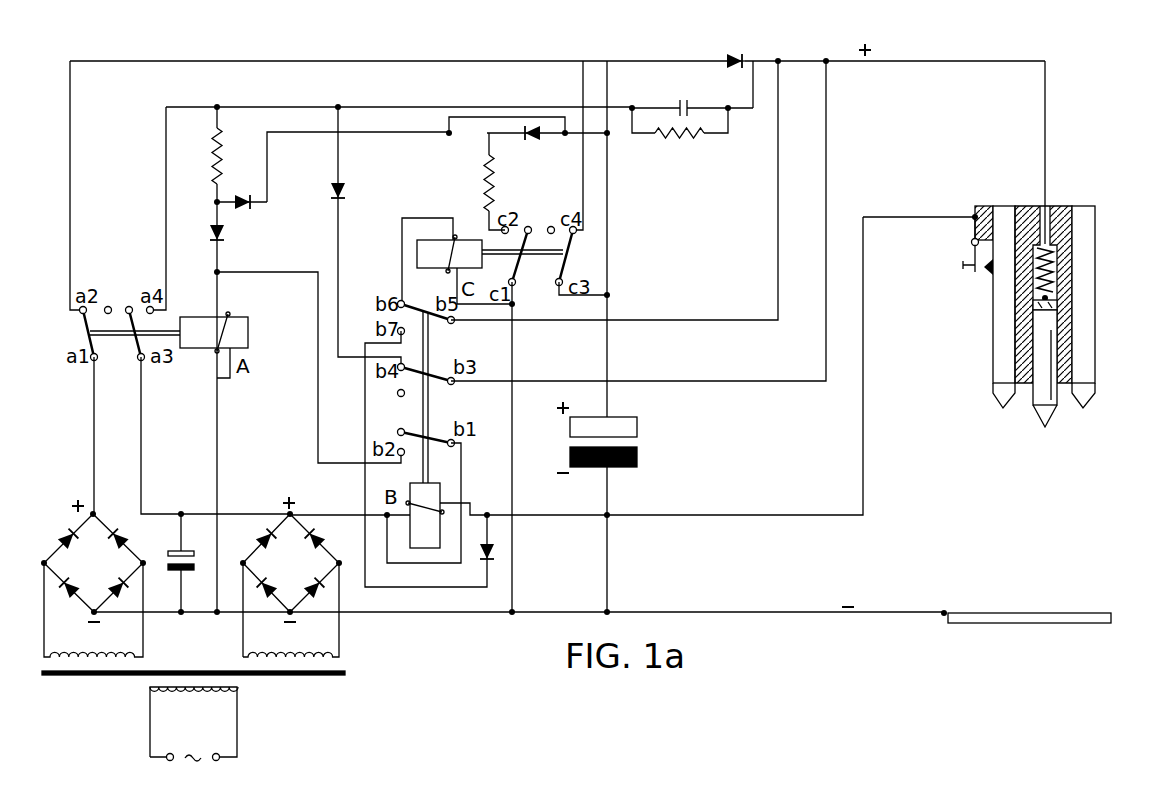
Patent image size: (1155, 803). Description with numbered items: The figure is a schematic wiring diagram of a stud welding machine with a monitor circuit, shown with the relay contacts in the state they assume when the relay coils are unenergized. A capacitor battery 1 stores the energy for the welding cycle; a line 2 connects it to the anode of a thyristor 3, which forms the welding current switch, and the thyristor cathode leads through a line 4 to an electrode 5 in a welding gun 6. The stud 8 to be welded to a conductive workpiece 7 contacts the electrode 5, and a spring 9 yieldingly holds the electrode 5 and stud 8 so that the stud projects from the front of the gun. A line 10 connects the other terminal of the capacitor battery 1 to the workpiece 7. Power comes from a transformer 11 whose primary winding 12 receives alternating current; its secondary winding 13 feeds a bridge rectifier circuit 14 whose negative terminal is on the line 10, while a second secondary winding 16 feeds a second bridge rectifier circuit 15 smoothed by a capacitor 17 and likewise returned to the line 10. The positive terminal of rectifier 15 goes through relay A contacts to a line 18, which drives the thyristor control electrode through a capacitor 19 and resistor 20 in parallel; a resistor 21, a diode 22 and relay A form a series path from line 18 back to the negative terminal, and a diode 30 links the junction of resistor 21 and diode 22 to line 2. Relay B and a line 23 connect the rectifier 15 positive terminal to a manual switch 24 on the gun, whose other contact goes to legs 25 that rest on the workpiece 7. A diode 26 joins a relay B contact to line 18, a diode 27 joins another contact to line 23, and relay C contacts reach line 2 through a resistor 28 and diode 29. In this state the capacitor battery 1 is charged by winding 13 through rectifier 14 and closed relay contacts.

The capacitor battery 1 is at (640, 427).
The line 2 is at (607, 226).
The thyristor 3 is at (747, 60).
The line 4 is at (805, 61).
The electrode 5 is at (1073, 308).
The welding gun 6 is at (993, 304).
The workpiece 7 is at (1020, 615).
The stud 8 is at (1050, 416).
The spring 9 is at (1073, 257).
The line 10 is at (690, 613).
The transformer 11 is at (109, 681).
The primary winding 12 is at (193, 691).
The secondary winding 13 is at (58, 655).
The bridge rectifier circuit 14 is at (101, 518).
The second bridge rectifier circuit 15 is at (283, 513).
The second secondary winding 16 is at (300, 655).
The smoothing capacitor 17 is at (178, 552).
The line 18 is at (372, 107).
The capacitor 19 is at (688, 106).
The resistor 20 is at (684, 141).
The resistor 21 is at (210, 149).
The diode 22 is at (227, 238).
The line 23 is at (697, 515).
The manual switch 24 is at (967, 269).
The legs 25 is at (1000, 396).
The diode 26 is at (350, 192).
The diode 27 is at (494, 561).
The resistor 28 is at (500, 177).
The diode 29 is at (537, 124).
The diode 30 is at (248, 206).